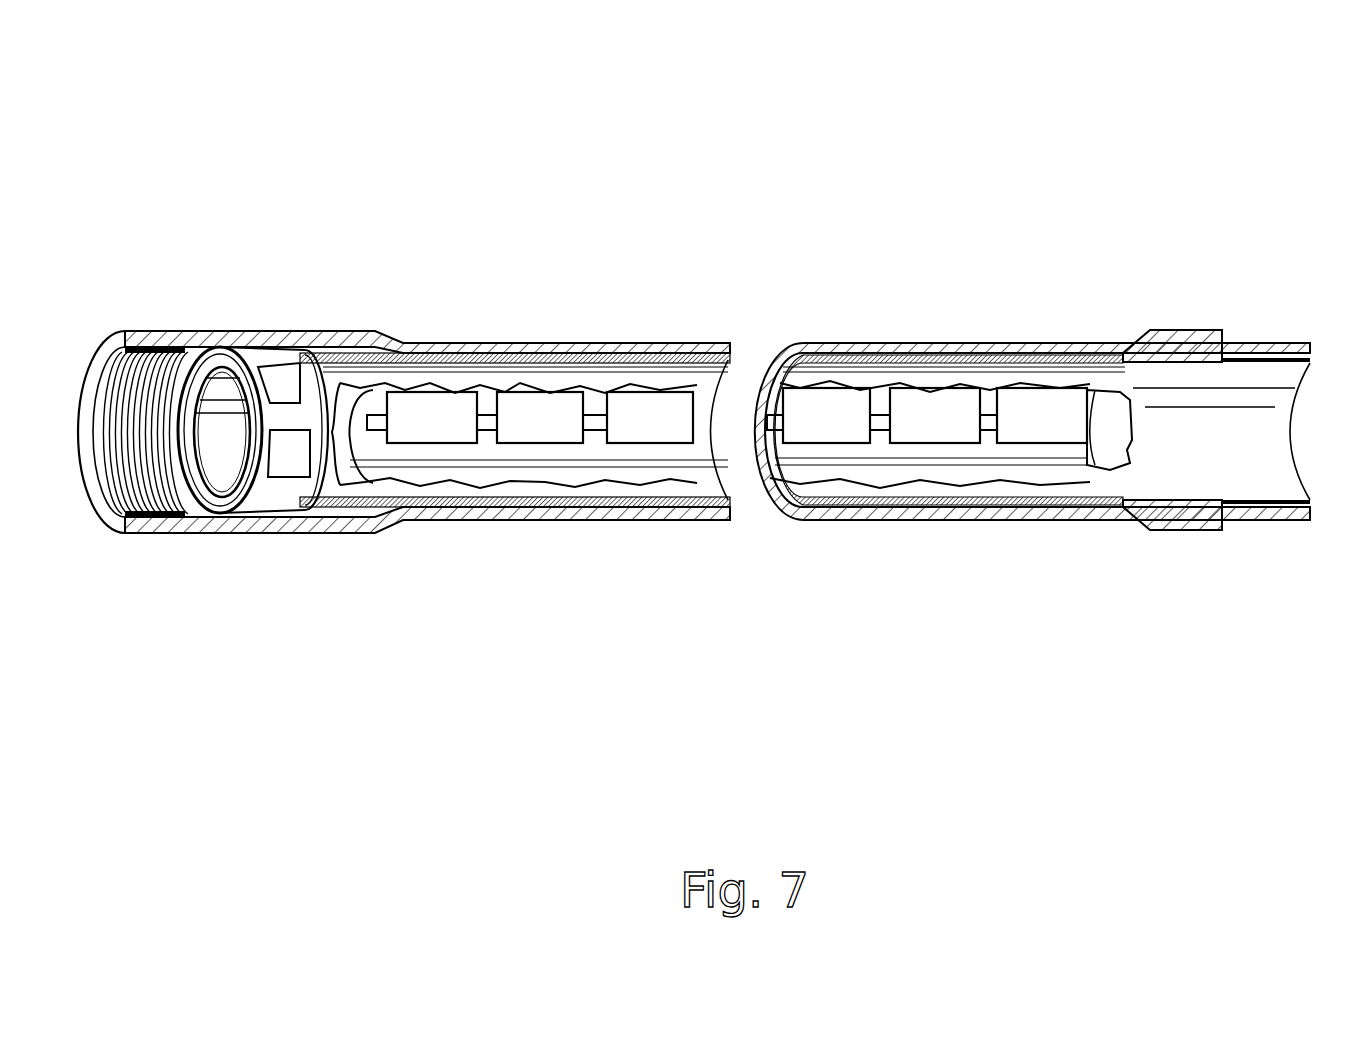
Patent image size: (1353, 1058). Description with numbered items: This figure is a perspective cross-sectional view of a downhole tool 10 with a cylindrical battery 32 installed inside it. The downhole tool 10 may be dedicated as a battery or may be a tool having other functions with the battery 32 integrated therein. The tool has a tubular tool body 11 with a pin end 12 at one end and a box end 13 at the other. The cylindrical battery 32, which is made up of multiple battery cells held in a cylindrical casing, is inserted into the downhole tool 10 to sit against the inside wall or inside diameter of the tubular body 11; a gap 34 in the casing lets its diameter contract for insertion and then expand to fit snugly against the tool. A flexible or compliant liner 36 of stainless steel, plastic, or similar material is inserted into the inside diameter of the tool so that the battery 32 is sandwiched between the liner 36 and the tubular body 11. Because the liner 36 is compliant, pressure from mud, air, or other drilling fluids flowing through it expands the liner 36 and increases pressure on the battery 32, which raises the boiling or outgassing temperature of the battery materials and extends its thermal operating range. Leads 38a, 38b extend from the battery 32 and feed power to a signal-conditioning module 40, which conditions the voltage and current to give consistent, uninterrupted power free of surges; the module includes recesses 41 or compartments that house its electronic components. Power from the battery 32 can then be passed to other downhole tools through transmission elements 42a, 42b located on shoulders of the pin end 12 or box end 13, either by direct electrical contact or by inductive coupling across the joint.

The downhole tool 10 is at (583, 175).
The tubular tool body 11 is at (687, 343).
The pin end 12 is at (1178, 330).
The box end 13 is at (227, 347).
The battery 32 is at (900, 343).
The gap 34 is at (1017, 467).
The liner 36 is at (542, 343).
The lead 38a is at (350, 352).
The lead 38b is at (393, 513).
The signal-conditioning module 40 is at (263, 483).
The recesses 41 is at (287, 452).
The transmission element 42a is at (198, 352).
The transmission element 42b is at (1318, 505).